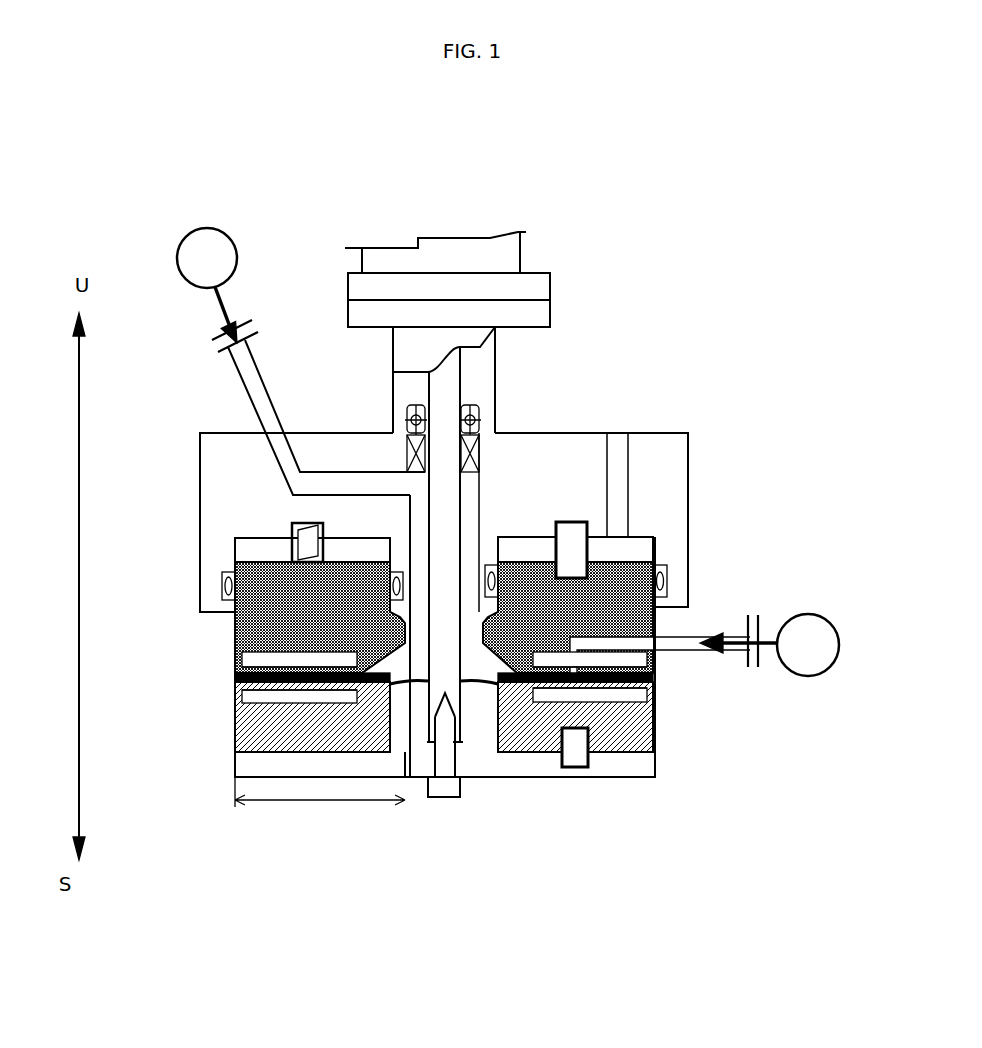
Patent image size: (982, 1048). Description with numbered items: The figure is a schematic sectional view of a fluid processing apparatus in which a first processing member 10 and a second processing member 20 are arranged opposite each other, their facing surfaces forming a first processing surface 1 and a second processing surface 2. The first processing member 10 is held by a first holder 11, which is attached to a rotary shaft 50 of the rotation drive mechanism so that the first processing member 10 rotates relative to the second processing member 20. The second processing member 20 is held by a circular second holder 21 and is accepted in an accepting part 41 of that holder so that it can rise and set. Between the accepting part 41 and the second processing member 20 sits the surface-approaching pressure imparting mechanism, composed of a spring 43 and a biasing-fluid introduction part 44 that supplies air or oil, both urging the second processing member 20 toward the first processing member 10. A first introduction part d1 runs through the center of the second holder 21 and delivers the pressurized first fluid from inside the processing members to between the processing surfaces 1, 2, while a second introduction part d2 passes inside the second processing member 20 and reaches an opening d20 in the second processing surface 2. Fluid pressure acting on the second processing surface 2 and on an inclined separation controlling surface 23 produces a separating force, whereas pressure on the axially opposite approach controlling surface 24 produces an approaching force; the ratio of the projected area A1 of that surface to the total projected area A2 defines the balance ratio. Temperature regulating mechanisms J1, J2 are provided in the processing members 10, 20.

The first processing surface 1 is at (337, 697).
The second processing surface 2 is at (327, 662).
The first processing member 10 is at (657, 738).
The first holder 11 is at (617, 762).
The second processing member 20 is at (240, 566).
The second holder 21 is at (665, 487).
The separation controlling surface 23 is at (480, 600).
The approach controlling surface 24 is at (465, 530).
The accepting part 41 is at (372, 547).
The spring 43 is at (295, 550).
The biasing-fluid introduction part 44 is at (615, 467).
The rotary shaft 50 is at (458, 740).
The first introduction part d1 is at (265, 408).
The second introduction part d2 is at (667, 643).
The opening d20 is at (622, 658).
The temperature regulating mechanism J1 is at (295, 703).
The temperature regulating mechanism J2 is at (260, 626).
The projected area of the approach controlling surface A1 is at (440, 630).
The total projected area A2 is at (315, 800).